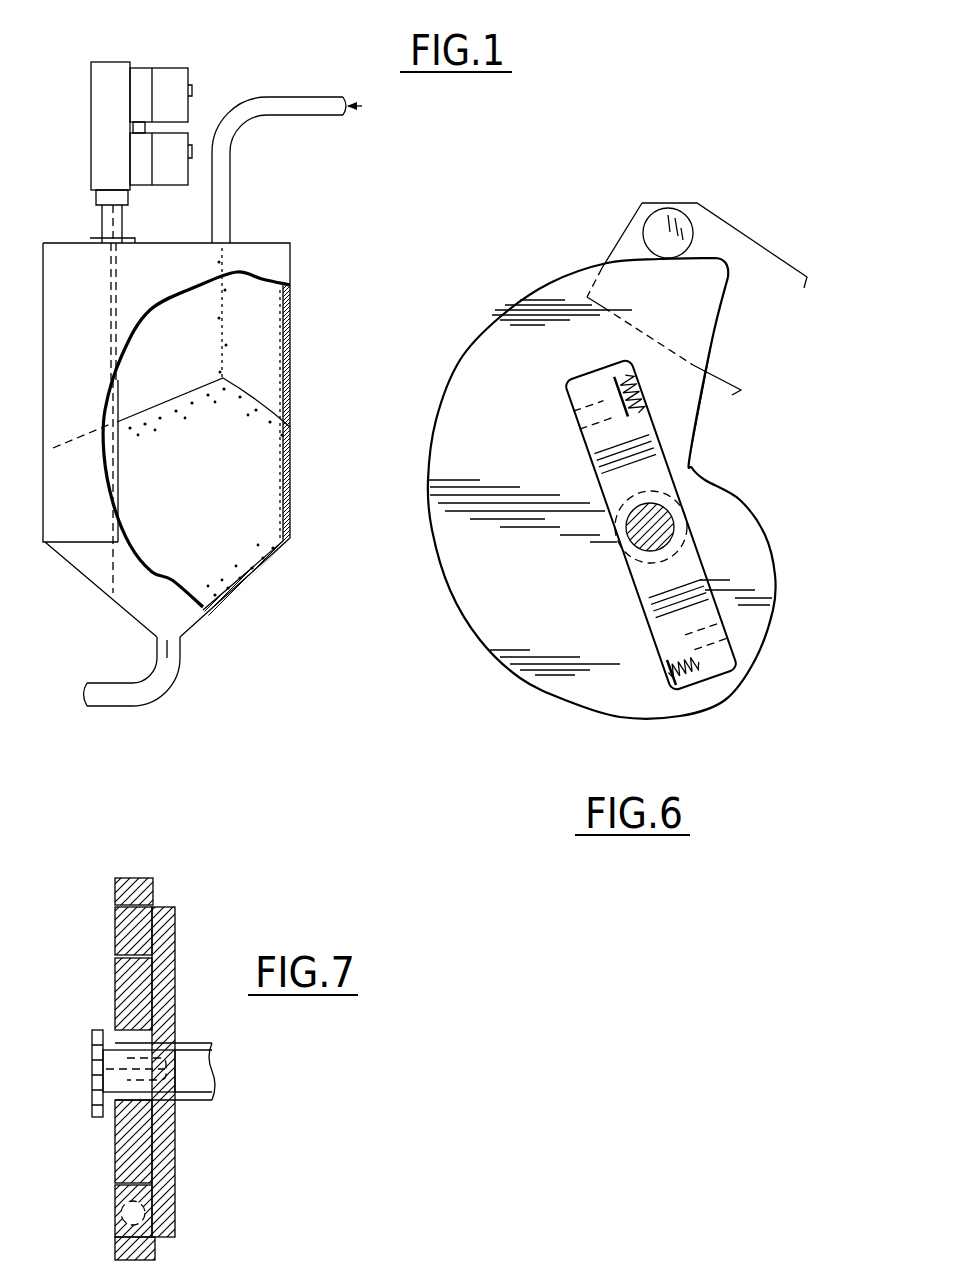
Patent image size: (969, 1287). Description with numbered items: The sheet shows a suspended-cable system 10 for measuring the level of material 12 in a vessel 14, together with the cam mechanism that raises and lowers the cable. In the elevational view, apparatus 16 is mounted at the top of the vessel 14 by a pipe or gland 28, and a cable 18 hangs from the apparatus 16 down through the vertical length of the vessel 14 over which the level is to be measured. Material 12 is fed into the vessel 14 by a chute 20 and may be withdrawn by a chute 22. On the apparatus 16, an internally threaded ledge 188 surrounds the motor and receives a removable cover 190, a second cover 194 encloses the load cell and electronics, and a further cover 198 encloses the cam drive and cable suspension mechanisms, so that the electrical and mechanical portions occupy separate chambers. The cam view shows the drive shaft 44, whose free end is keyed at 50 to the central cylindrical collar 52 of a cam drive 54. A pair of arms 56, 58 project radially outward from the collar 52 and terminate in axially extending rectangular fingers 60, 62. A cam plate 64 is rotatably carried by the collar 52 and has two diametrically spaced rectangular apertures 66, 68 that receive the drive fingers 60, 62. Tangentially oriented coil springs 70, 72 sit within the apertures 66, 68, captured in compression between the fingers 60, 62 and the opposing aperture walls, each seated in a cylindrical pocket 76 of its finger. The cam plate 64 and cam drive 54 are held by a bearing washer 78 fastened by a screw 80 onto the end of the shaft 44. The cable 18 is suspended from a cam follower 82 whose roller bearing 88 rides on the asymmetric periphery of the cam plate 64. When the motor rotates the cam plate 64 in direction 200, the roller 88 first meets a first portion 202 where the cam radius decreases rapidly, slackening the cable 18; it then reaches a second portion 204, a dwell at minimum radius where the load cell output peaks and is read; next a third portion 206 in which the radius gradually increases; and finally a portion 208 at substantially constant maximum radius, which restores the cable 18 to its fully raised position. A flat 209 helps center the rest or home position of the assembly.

In FIG. 1, the system 10 is at (380, 233).
In FIG. 1, the material 12 is at (263, 435).
In FIG. 1, the vessel 14 is at (292, 341).
In FIG. 1, the apparatus 16 is at (85, 48).
In FIG. 1, the cable 18 is at (118, 403).
In FIG. 1, the chute 20 is at (229, 206).
In FIG. 1, the chute 22 is at (168, 698).
In FIG. 1, the pipe or gland 28 is at (102, 211).
In FIG. 6, the drive shaft 44 is at (627, 524).
In FIG. 7, the drive shaft 44 is at (203, 1062).
In FIG. 7, the key 50 is at (164, 1049).
In FIG. 6, the central cylindrical collar 52 is at (687, 512).
In FIG. 7, the central cylindrical collar 52 is at (113, 1116).
In FIG. 6, the cam drive 54 is at (641, 587).
In FIG. 7, the cam drive 54 is at (179, 955).
In FIG. 6, the arm 56 is at (601, 470).
In FIG. 6, the arm 58 is at (701, 573).
In FIG. 6, the finger 60 is at (563, 405).
In FIG. 7, the finger 60 is at (120, 930).
In FIG. 7, the finger 62 is at (124, 1229).
In FIG. 6, the cam plate 64 is at (481, 628).
In FIG. 7, the cam plate 64 is at (148, 880).
In FIG. 6, the rectangular aperture 66 is at (633, 353).
In FIG. 7, the rectangular aperture 66 is at (112, 906).
In FIG. 6, the rectangular aperture 68 is at (660, 654).
In FIG. 7, the rectangular aperture 68 is at (116, 1202).
In FIG. 6, the coil spring 70 is at (648, 379).
In FIG. 7, the coil spring 70 is at (133, 994).
In FIG. 6, the coil spring 72 is at (667, 673).
In FIG. 6, the cylindrical pocket 76 is at (581, 423).
In FIG. 7, the bearing washer 78 is at (93, 1032).
In FIG. 7, the screw 80 is at (102, 1070).
In FIG. 6, the cam follower 82 is at (762, 240).
In FIG. 6, the roller bearing 88 is at (690, 212).
In FIG. 1, the internally threaded cylindrical flange or ledge 188 is at (143, 71).
In FIG. 1, the cover 190 is at (181, 77).
In FIG. 1, the cover 194 is at (181, 174).
In FIG. 1, the cover 198 is at (96, 163).
In FIG. 6, the direction 200 is at (403, 478).
In FIG. 6, the first portion 202 is at (702, 404).
In FIG. 6, the second portion 204 is at (694, 461).
In FIG. 6, the third portion 206 is at (776, 626).
In FIG. 6, the portion 208 is at (572, 278).
In FIG. 6, the flat 209 is at (700, 259).